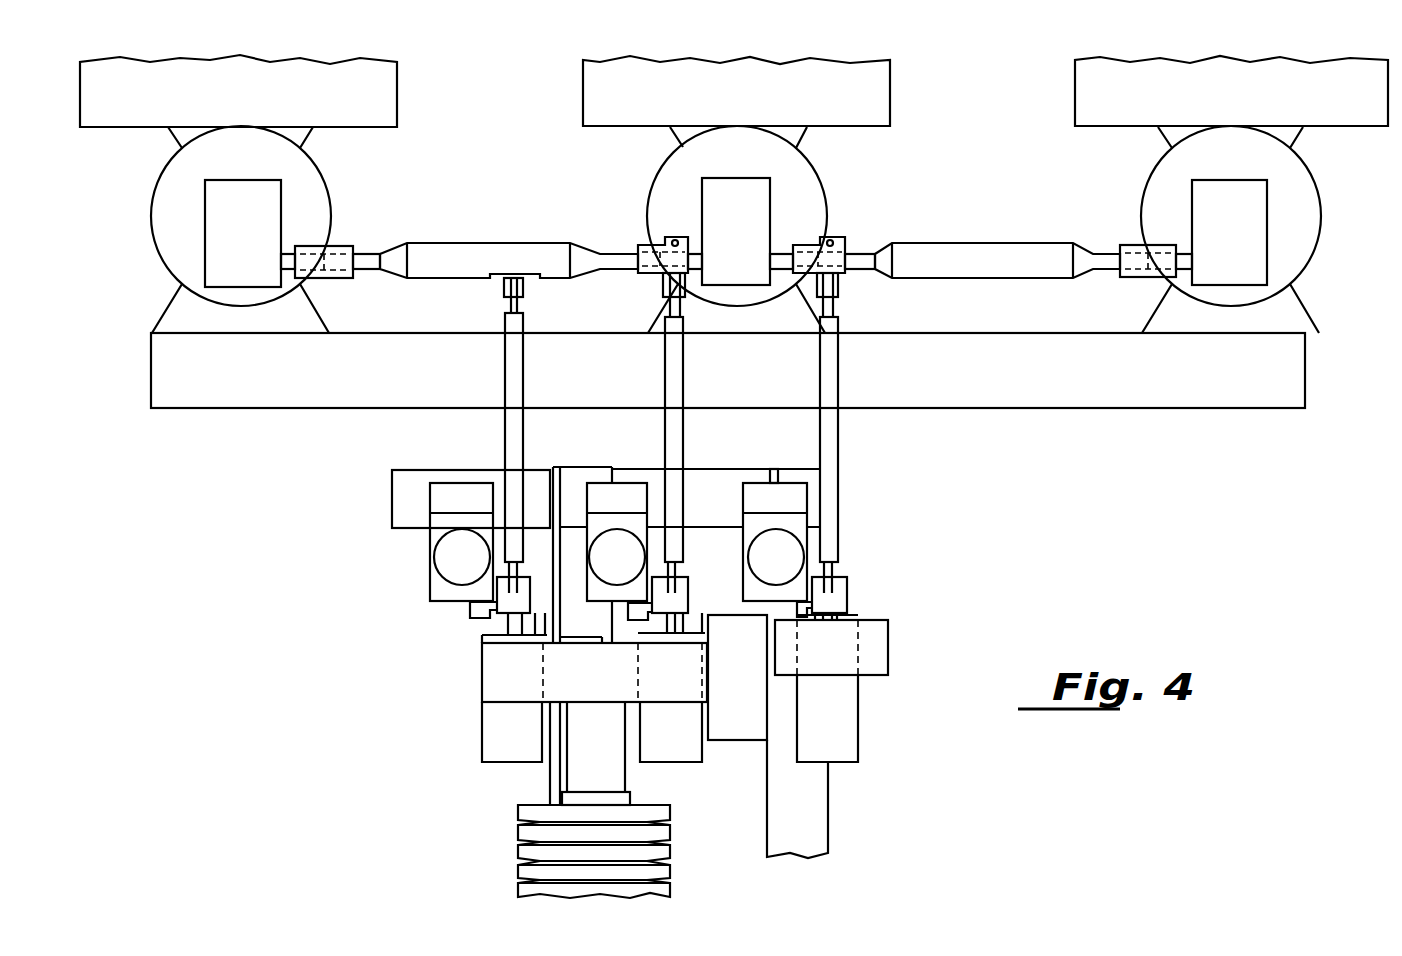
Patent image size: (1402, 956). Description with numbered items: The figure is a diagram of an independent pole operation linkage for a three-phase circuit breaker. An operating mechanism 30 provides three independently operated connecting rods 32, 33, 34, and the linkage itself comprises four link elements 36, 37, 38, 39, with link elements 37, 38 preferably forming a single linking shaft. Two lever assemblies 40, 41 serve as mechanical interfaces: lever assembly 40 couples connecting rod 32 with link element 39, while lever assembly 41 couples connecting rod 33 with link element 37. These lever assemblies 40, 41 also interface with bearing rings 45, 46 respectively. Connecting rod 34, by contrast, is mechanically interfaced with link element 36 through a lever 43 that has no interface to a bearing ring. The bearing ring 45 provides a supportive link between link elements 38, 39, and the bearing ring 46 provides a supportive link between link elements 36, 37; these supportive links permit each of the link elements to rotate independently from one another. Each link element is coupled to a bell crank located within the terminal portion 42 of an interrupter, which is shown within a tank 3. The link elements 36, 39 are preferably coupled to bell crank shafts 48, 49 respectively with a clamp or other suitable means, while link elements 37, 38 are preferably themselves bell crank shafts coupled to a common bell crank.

The tank 3 is at (312, 182).
The terminal portion 42 is at (267, 223).
The bell crank shaft 48 is at (340, 278).
The bell crank shaft 49 is at (1165, 244).
The link element 36 is at (523, 242).
The link element 39 is at (980, 242).
The lever 43 is at (527, 288).
The connecting rod 34 is at (517, 438).
The connecting rod 33 is at (676, 432).
The connecting rod 32 is at (829, 442).
The bearing ring 46 is at (645, 247).
The bearing ring 45 is at (812, 245).
The lever assembly 41 is at (665, 240).
The lever assembly 40 is at (845, 250).
The link element 37 is at (695, 250).
The link element 38 is at (785, 255).
The operating mechanism 30 is at (860, 590).